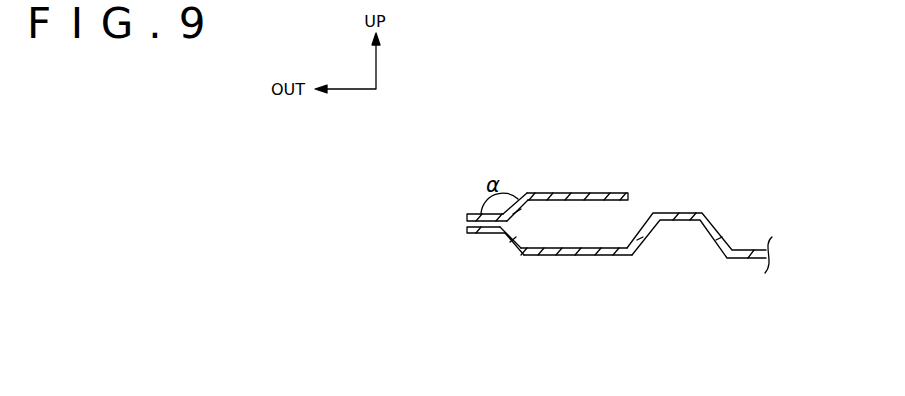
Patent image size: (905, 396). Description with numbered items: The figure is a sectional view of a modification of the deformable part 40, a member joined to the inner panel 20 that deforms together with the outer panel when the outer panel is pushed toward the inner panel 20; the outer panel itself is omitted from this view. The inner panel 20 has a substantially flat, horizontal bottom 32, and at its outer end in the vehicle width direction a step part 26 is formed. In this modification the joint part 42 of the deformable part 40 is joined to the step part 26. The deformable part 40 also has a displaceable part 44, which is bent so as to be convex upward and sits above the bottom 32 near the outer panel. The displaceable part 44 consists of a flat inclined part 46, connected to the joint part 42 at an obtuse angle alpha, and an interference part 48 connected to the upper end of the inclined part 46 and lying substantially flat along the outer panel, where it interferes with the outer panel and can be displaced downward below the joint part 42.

The inner panel 20 is at (707, 215).
The step part 26 is at (485, 233).
The bottom 32 is at (573, 257).
The deformable part 40 is at (455, 97).
The joint part 42 is at (471, 213).
The displaceable part 44 is at (612, 131).
The inclined part 46 is at (519, 192).
The interference part 48 is at (585, 193).